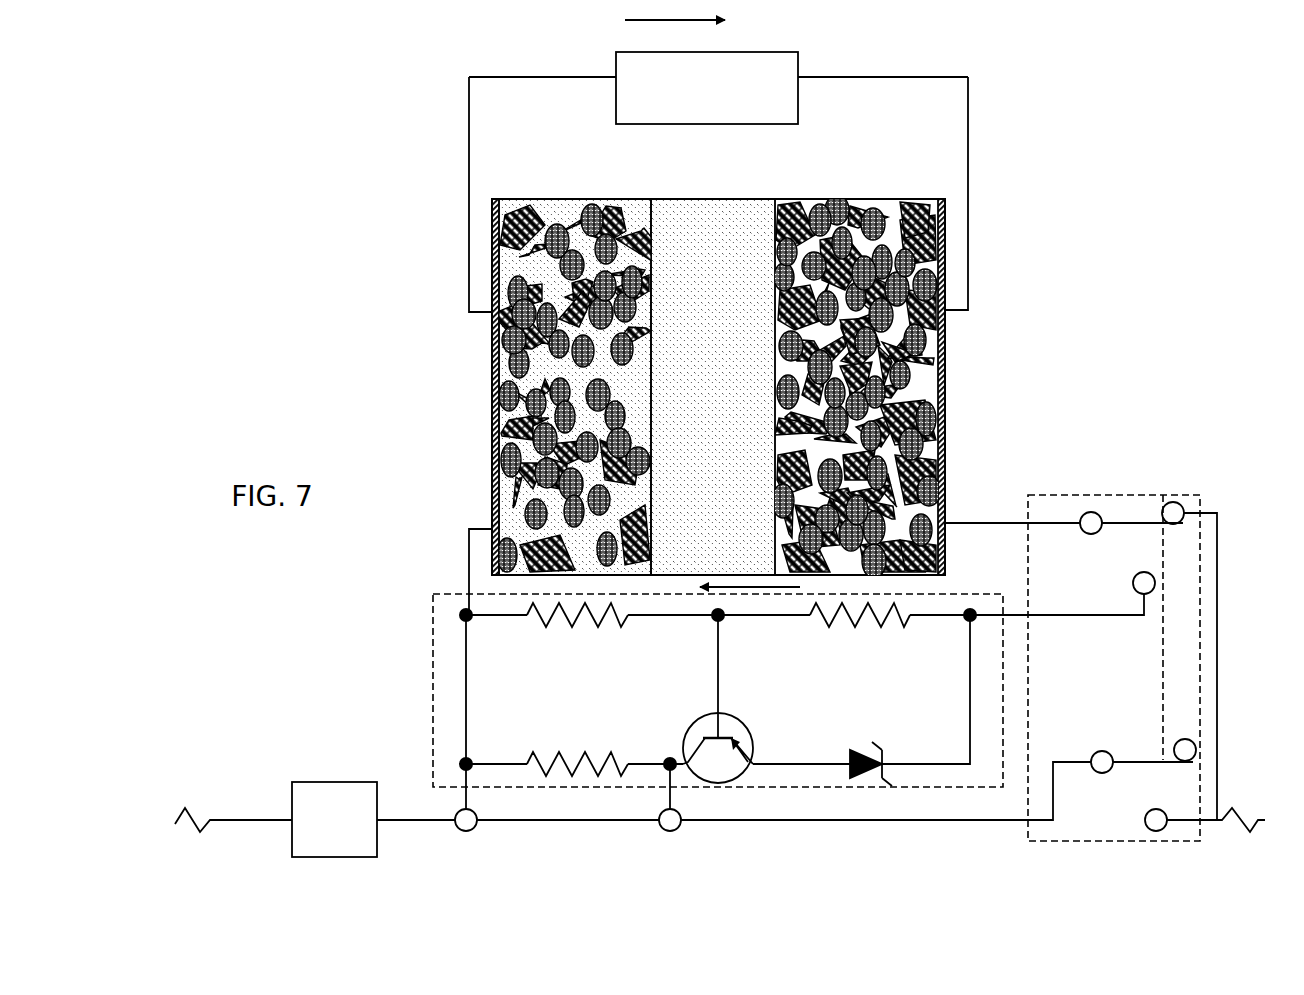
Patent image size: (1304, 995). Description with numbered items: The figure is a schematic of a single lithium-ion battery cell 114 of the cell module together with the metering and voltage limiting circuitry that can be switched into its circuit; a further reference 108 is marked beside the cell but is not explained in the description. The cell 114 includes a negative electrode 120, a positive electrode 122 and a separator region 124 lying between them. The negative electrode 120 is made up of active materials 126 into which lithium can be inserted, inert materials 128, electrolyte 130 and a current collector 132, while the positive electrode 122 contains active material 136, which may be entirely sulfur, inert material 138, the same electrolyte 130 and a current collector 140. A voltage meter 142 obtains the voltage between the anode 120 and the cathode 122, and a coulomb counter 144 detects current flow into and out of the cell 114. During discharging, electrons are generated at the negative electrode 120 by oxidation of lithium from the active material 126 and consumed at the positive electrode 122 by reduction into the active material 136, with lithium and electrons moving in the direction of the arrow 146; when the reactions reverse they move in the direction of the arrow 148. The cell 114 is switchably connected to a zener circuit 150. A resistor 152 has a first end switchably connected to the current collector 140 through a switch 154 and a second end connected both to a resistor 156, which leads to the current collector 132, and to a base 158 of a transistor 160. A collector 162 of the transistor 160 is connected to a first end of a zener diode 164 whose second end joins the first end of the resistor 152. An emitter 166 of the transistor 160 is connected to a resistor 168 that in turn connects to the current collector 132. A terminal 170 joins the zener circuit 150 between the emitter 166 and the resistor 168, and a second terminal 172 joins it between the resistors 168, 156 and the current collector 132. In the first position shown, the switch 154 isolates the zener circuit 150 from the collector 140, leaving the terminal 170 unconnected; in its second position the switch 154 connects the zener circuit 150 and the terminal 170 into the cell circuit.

The electrochemical cell 108 is at (450, 344).
The lithium-ion battery cell 114 is at (1100, 178).
The negative electrode 120 is at (629, 348).
The positive electrode 122 is at (959, 358).
The separator region 124 is at (738, 200).
The active materials 126 is at (491, 459).
The inert materials 128 is at (620, 205).
The electrolyte 130 is at (592, 205).
The current collector 132 is at (491, 498).
The active material 136 is at (822, 205).
The inert material 138 is at (915, 205).
The current collector 140 is at (950, 423).
The voltage meter 142 is at (790, 52).
The coulomb counter 144 is at (300, 782).
The arrow 146 is at (636, 20).
The arrow 148 is at (778, 590).
The zener circuit 150 is at (393, 652).
The resistor 152 is at (890, 630).
The switch 154 is at (1167, 480).
The resistor 156 is at (605, 632).
The base 158 is at (720, 714).
The transistor 160 is at (698, 718).
The collector 162 is at (752, 762).
The zener diode 164 is at (866, 760).
The emitter 166 is at (680, 768).
The resistor 168 is at (565, 758).
The terminal 170 is at (680, 830).
The terminal 172 is at (458, 812).